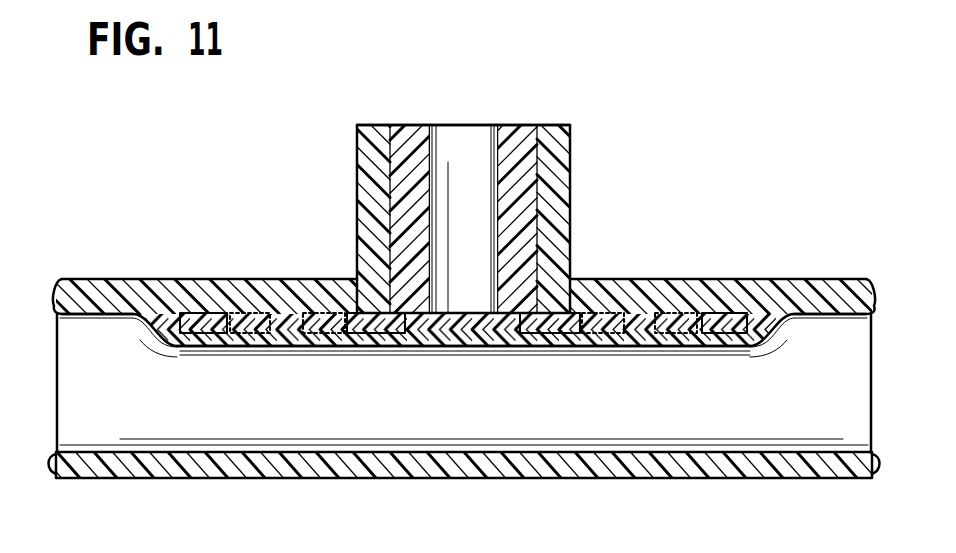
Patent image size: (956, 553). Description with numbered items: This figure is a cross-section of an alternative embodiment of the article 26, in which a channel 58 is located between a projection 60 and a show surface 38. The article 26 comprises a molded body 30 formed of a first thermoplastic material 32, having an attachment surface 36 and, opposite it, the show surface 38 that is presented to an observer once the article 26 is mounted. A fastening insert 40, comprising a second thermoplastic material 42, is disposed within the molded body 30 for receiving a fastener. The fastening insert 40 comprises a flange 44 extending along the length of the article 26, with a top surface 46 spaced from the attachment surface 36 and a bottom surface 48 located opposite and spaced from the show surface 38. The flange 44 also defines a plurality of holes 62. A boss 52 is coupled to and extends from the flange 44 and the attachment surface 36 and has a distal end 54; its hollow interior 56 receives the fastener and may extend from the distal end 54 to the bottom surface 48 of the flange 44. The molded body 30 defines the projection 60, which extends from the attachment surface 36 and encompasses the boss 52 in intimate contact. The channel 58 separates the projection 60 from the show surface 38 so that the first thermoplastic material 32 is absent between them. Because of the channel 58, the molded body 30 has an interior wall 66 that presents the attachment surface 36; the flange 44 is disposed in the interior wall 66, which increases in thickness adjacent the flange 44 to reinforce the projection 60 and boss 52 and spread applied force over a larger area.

The article 26 is at (250, 158).
The molded body 30 is at (738, 268).
The first thermoplastic material 32 is at (670, 292).
The attachment surface 36 is at (170, 279).
The show surface 38 is at (446, 478).
The fastening insert 40 is at (382, 255).
The second thermoplastic material 42 is at (376, 340).
The flange 44 is at (565, 350).
The top surface 46 is at (278, 312).
The bottom surface 48 is at (300, 335).
The boss 52 is at (537, 152).
The distal end 54 is at (520, 127).
The hollow interior 56 is at (493, 147).
The channel 58 is at (56, 322).
The projection 60 is at (357, 142).
The holes 62 is at (694, 322).
The interior wall 66 is at (93, 293).